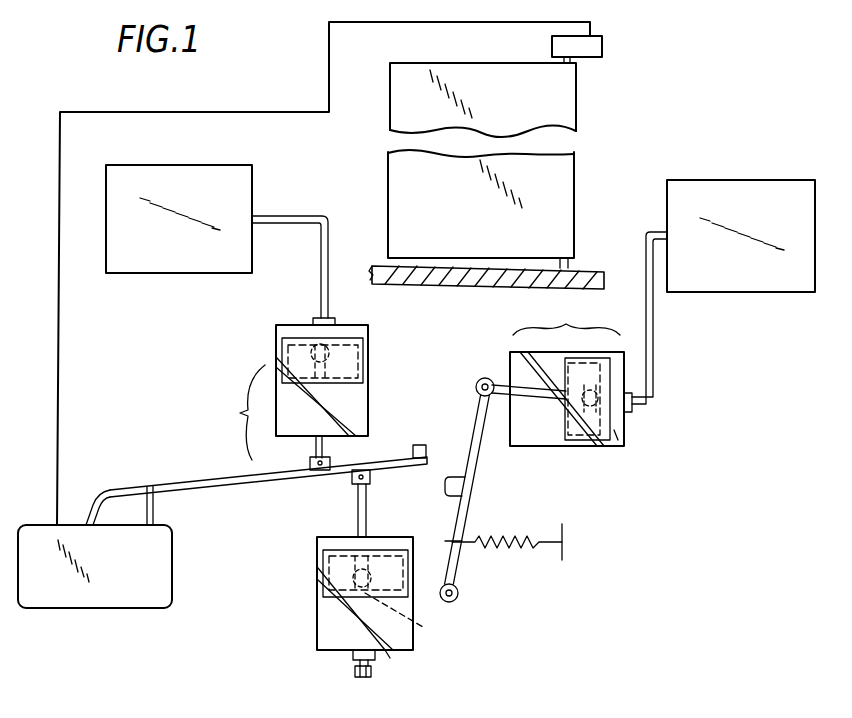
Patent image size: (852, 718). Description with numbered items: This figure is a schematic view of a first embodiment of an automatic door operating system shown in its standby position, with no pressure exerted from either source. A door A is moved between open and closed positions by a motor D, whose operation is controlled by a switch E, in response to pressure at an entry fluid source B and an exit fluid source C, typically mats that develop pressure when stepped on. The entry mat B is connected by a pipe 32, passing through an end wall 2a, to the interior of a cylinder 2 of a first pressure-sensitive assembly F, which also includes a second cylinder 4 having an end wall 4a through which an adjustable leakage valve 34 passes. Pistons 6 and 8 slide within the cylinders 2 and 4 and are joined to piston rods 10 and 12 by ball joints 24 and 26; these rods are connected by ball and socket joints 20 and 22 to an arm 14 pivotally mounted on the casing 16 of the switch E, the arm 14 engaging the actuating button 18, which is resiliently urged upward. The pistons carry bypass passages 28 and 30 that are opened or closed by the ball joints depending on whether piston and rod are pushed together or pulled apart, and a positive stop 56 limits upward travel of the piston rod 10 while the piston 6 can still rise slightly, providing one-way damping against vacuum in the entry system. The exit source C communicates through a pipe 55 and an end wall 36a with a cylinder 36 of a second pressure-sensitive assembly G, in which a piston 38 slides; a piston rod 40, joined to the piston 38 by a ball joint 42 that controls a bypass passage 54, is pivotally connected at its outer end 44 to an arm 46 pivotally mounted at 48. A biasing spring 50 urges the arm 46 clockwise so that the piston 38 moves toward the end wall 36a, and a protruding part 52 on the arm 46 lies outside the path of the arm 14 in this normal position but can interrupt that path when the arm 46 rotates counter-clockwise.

The cylinder 2 is at (369, 401).
The end wall 2a is at (344, 325).
The cylinder 4 is at (415, 598).
The end wall 4a is at (390, 652).
The piston 6 is at (350, 372).
The piston 8 is at (395, 576).
The piston rod 10 is at (324, 450).
The piston rod 12 is at (367, 517).
The arm 14 is at (390, 466).
The casing 16 is at (99, 584).
The actuating button 18 is at (155, 512).
The ball and socket joint 20 is at (310, 463).
The ball and socket joint 22 is at (352, 478).
The ball joint 24 is at (370, 348).
The ball joint 26 is at (345, 580).
The bypass passage 28 is at (313, 340).
The bypass passage 30 is at (406, 619).
The pipe 32 is at (317, 212).
The adjustable leakage valve 34 is at (354, 656).
The cylinder 36 is at (545, 450).
The end wall 36a is at (625, 436).
The piston 38 is at (605, 450).
The piston rod 40 is at (490, 380).
The ball joint 42 is at (605, 390).
The outer end 44 is at (477, 389).
The arm 46 is at (474, 464).
The pivot 48 is at (460, 596).
The biasing spring 50 is at (524, 552).
The protruding part 52 is at (454, 476).
The bypass passage 54 is at (624, 410).
The pipe 55 is at (654, 318).
The positive stop 56 is at (419, 445).
The door A is at (462, 221).
The entry fluid source B is at (162, 255).
The exit fluid source C is at (718, 270).
The motor D is at (603, 50).
The switch E is at (142, 570).
The first pressure-sensitive assembly F is at (231, 412).
The second pressure-sensitive assembly G is at (566, 313).